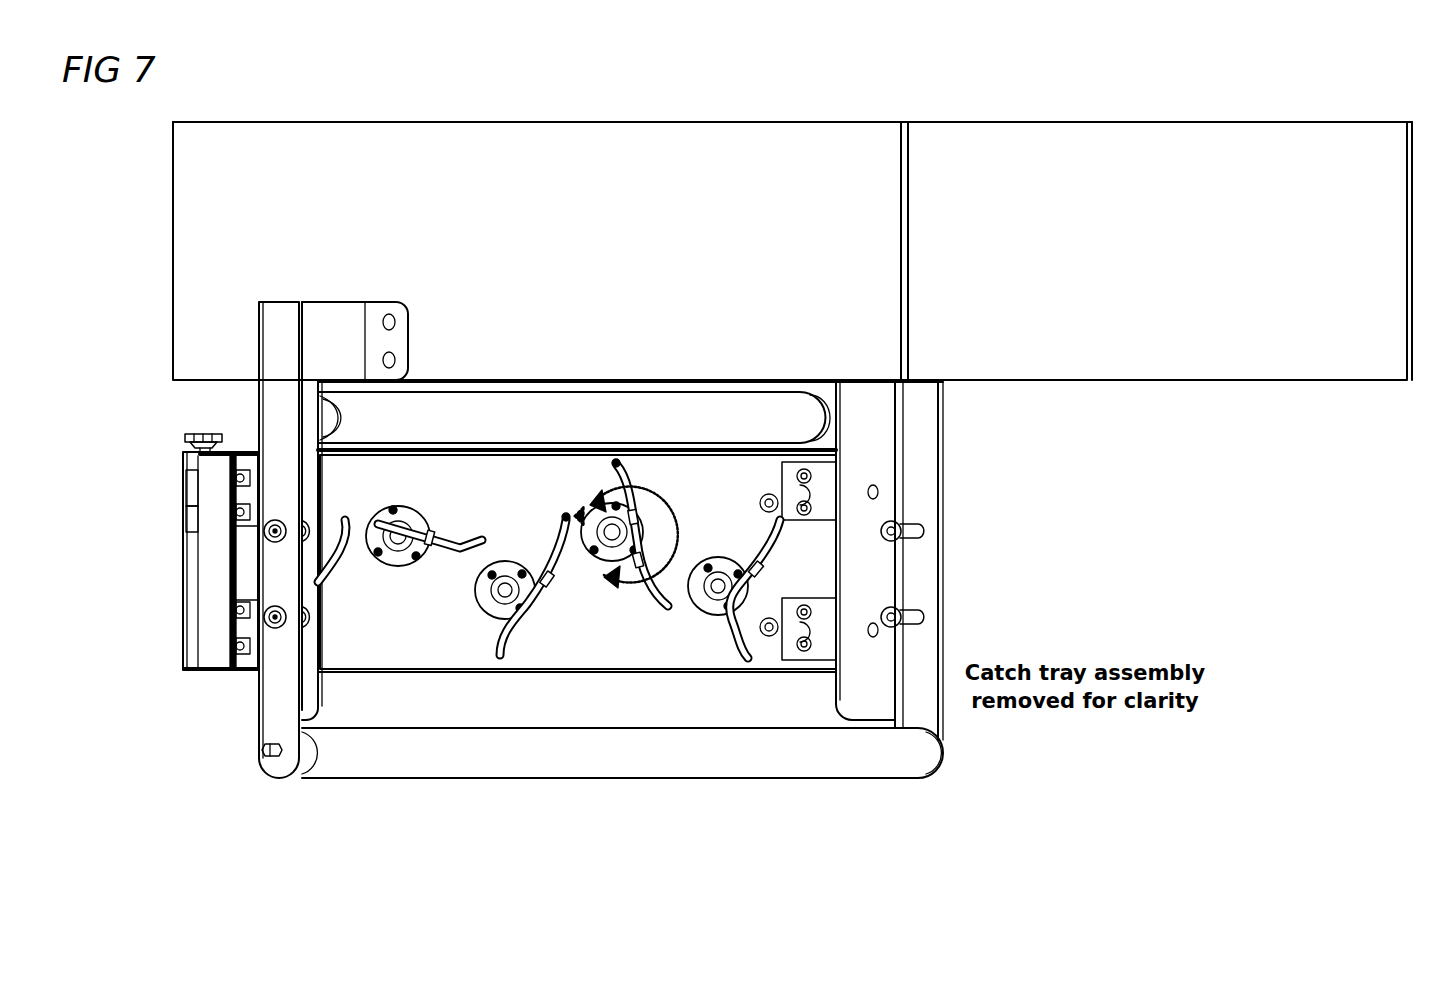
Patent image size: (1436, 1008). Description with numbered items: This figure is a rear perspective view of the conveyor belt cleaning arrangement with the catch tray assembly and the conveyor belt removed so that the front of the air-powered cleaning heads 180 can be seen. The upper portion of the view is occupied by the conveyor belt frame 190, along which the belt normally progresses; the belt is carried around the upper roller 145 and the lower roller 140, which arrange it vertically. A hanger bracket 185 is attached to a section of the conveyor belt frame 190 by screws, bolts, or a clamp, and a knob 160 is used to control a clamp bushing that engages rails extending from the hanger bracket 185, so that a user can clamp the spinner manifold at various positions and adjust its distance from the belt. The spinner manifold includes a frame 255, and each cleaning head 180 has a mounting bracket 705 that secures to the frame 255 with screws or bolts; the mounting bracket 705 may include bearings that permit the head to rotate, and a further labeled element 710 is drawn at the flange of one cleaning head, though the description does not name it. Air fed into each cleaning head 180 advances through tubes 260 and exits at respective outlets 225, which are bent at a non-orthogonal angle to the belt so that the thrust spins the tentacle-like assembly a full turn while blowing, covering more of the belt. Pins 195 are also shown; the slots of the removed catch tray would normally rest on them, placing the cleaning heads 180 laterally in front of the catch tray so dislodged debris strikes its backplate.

The lower roller 140 is at (314, 782).
The upper roller 145 is at (345, 432).
The knob 160 is at (184, 437).
The cleaning head 180 is at (549, 667).
The hanger bracket 185 is at (261, 303).
The conveyor belt frame 190 is at (792, 251).
The pin 195 is at (264, 615).
The outlet 225 is at (568, 514).
The frame 255 is at (414, 636).
The tube 260 is at (568, 570).
The mounting bracket 705 is at (414, 510).
The mounting flange 710 is at (532, 620).